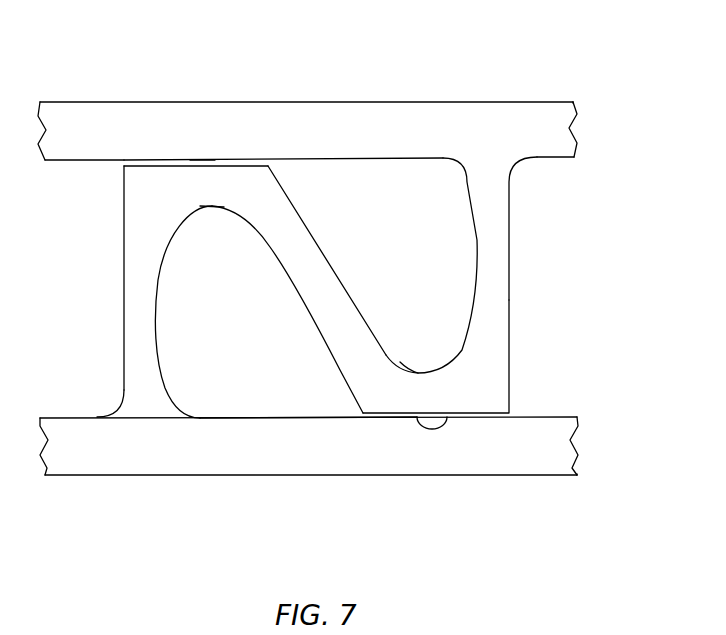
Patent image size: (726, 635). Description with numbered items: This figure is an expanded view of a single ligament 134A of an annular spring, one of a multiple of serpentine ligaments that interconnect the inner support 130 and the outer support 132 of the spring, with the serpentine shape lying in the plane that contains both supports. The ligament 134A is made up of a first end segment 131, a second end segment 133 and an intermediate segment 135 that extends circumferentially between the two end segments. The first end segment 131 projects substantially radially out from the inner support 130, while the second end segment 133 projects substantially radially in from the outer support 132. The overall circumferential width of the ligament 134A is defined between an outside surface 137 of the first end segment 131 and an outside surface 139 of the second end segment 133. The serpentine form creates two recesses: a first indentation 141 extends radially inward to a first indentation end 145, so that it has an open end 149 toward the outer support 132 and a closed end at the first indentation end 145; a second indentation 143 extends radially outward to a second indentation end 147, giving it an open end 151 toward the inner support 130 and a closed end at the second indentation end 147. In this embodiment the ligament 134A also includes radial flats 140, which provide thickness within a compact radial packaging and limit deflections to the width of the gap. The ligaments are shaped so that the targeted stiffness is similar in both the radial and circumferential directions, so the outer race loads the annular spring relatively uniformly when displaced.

The inner support 130 is at (398, 460).
The first end segment 131 is at (133, 314).
The outer support 132 is at (370, 115).
The second end segment 133 is at (500, 270).
The ligament 134A is at (578, 299).
The intermediate segment 135 is at (325, 294).
The outside surface of the first end segment 137 is at (124, 373).
The outside surface of the second end segment 139 is at (511, 358).
The radial flats 140 is at (200, 162).
The first indentation 141 is at (400, 228).
The second indentation 143 is at (230, 327).
The first indentation end 145 is at (413, 372).
The second indentation end 147 is at (207, 207).
The open end of the first indentation 149 is at (384, 172).
The open end of the second indentation 151 is at (249, 409).